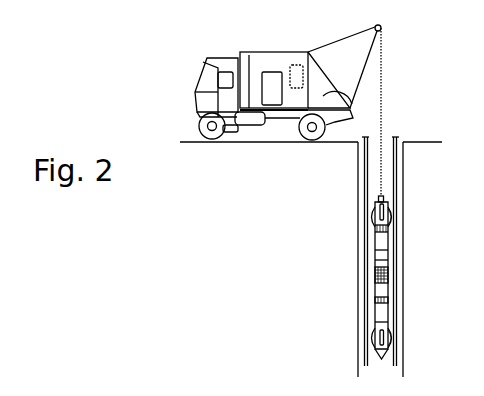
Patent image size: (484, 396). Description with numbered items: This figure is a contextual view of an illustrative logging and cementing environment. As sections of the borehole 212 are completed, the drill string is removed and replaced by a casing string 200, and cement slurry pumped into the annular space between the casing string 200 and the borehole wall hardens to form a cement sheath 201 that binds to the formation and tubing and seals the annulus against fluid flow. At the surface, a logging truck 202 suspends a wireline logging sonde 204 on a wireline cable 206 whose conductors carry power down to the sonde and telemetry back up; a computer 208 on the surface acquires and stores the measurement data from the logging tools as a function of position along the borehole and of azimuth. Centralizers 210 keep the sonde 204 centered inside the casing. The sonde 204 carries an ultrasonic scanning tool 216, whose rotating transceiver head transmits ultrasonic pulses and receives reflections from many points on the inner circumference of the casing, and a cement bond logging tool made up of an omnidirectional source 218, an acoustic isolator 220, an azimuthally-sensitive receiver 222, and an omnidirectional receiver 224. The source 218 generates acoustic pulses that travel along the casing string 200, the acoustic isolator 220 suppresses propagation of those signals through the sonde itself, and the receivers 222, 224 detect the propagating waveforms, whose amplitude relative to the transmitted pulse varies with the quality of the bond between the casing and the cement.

The casing string 200 is at (365, 198).
The cement sheath 201 is at (370, 216).
The logging truck 202 is at (259, 53).
The wireline logging sonde 204 is at (379, 354).
The wireline cable 206 is at (382, 136).
The computer 208 is at (298, 65).
The centralizers 210 is at (391, 338).
The borehole 212 is at (358, 170).
The ultrasonic scanning tool 216 is at (371, 232).
The omnidirectional source 218 is at (375, 255).
The acoustic isolator 220 is at (375, 280).
The azimuthally-sensitive receiver 222 is at (375, 301).
The omnidirectional receiver 224 is at (375, 326).